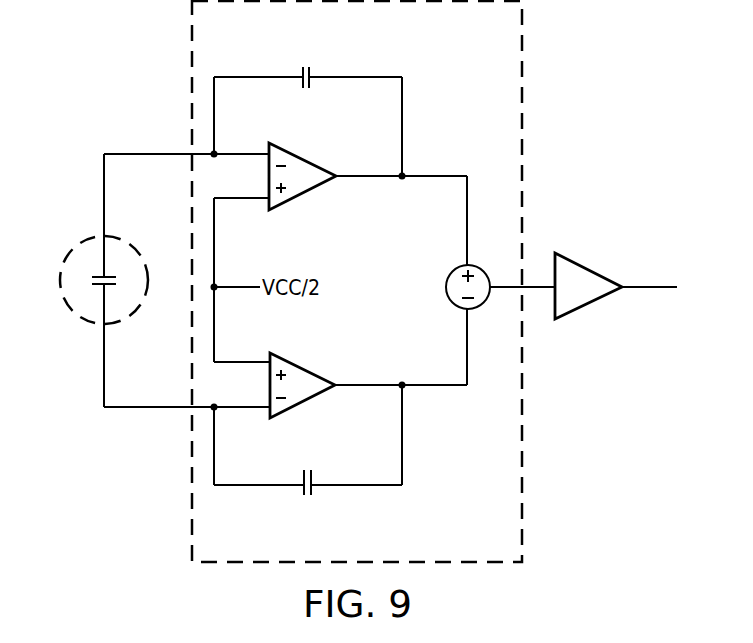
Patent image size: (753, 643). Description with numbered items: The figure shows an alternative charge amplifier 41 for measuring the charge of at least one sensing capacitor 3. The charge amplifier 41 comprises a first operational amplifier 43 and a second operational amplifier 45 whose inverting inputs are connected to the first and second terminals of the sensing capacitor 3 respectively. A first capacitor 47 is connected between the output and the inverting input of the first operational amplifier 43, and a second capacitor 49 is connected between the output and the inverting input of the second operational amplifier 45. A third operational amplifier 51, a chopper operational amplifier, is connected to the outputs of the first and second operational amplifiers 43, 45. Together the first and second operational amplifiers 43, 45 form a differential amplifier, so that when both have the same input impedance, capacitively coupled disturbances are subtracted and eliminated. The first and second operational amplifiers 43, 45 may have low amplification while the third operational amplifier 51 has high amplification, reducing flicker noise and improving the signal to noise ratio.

The sensing capacitor 3 is at (73, 243).
The charge amplifier 41 is at (530, 106).
The first operational amplifier 43 is at (303, 197).
The second operational amplifier 45 is at (303, 366).
The first capacitor 47 is at (310, 66).
The second capacitor 49 is at (306, 498).
The third operational amplifier 51 is at (588, 268).